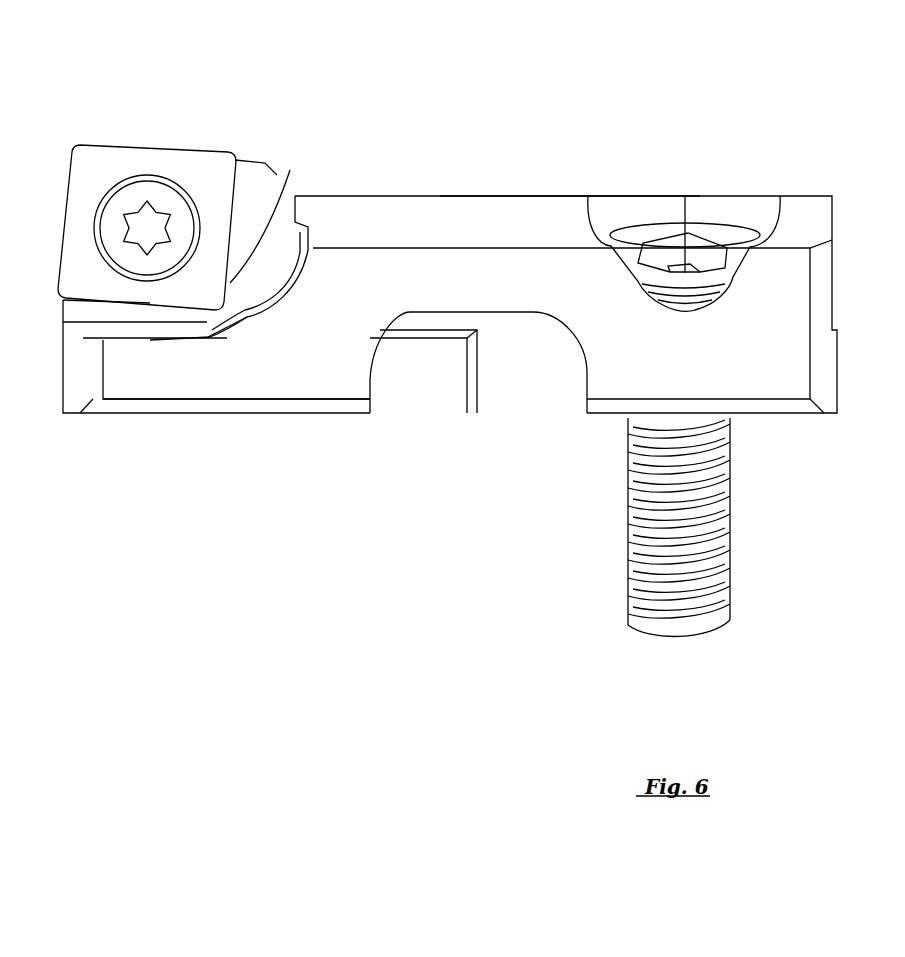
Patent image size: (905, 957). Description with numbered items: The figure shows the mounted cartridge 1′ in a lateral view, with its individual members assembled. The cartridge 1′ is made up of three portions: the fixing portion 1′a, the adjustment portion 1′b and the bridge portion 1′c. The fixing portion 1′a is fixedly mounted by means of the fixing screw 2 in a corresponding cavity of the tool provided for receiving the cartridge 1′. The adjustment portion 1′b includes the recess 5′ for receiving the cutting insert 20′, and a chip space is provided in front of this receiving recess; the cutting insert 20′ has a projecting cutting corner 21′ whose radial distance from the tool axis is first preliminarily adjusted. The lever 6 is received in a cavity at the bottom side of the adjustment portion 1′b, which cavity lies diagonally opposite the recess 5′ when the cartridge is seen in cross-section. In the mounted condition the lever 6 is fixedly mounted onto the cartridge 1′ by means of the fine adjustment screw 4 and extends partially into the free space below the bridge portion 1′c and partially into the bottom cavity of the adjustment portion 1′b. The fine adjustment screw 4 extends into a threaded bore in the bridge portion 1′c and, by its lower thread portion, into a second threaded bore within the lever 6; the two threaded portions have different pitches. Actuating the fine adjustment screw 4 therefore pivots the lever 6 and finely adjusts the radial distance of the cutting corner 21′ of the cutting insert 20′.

The cartridge 1′ is at (546, 180).
The fixing portion 1′a is at (767, 277).
The adjustment portion 1′b is at (168, 388).
The bridge portion 1′c is at (470, 260).
The fixing screw 2 is at (640, 507).
The fine adjustment screw 4 is at (453, 318).
The recess 5′ is at (307, 153).
The lever 6 is at (423, 395).
The cutting insert 20′ is at (210, 170).
The projecting cutting corner 21′ is at (74, 149).